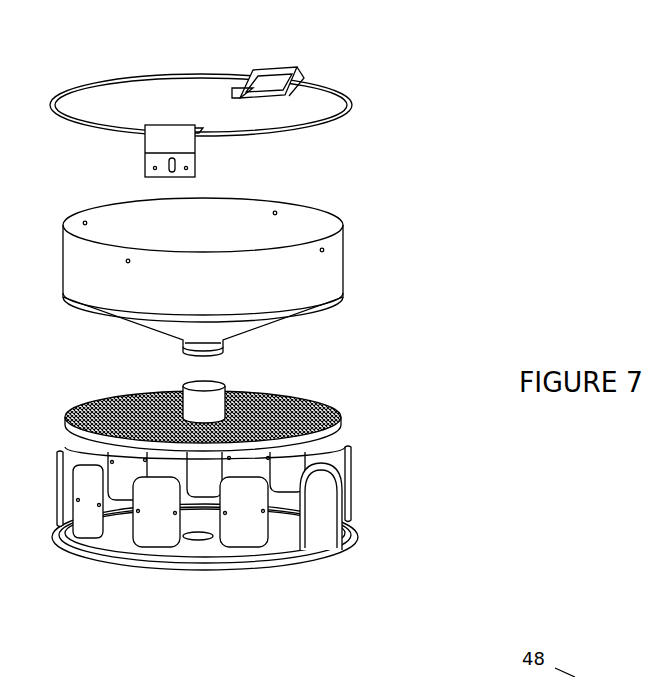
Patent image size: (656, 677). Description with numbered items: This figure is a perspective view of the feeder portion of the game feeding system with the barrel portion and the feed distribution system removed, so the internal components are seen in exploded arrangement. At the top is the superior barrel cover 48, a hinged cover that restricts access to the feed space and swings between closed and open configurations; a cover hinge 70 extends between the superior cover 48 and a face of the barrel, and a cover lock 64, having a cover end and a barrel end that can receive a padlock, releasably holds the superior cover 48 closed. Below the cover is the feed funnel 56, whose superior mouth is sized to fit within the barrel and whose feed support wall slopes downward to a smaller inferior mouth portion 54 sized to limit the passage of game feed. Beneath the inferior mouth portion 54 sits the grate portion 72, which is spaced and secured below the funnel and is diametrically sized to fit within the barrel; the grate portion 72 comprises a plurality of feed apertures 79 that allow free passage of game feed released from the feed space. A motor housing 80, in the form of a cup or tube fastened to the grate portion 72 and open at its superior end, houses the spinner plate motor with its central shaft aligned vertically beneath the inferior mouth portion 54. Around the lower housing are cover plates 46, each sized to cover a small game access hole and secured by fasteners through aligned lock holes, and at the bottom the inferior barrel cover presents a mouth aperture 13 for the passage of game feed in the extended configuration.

The mouth aperture 13 is at (195, 548).
The cover plate 46 is at (150, 550).
The superior barrel cover 48 is at (322, 100).
The inferior mouth portion 54 is at (196, 358).
The feed funnel 56 is at (348, 248).
The cover lock 64 is at (198, 162).
The cover hinge 70 is at (296, 70).
The grate portion 72 is at (64, 415).
The feed apertures 79 is at (300, 400).
The motor housing 80 is at (218, 382).